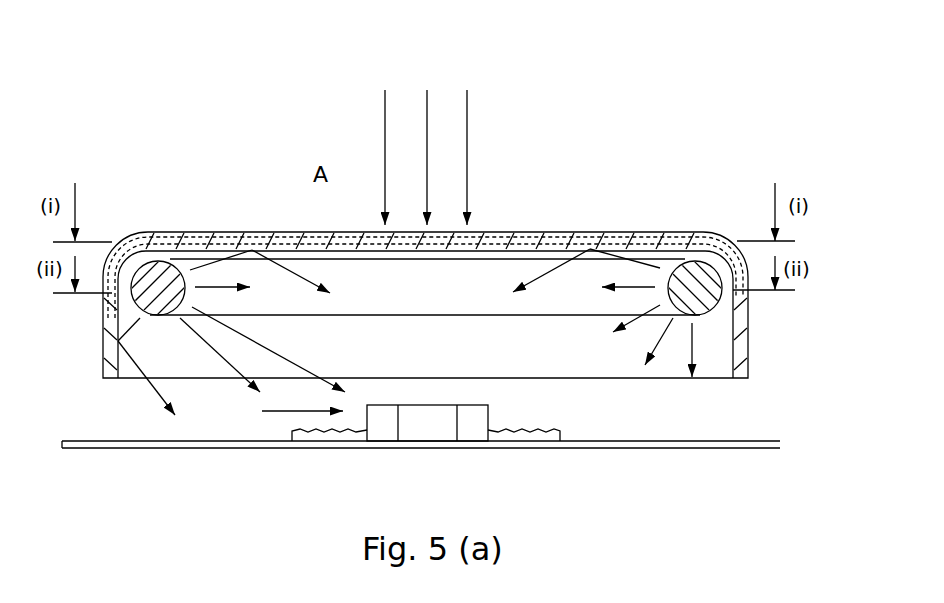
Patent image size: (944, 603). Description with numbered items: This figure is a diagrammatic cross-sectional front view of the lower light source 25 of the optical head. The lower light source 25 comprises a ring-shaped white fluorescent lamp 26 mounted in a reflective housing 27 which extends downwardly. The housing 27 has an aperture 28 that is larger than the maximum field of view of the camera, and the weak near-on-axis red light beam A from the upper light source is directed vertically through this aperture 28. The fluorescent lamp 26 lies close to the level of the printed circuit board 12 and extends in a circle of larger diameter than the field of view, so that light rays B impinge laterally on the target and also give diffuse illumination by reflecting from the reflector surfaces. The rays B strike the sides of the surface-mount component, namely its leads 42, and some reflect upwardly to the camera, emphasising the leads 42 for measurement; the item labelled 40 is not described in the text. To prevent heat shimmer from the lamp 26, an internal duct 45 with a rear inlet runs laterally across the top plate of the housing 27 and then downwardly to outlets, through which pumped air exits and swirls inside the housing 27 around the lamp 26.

The lower light source 25 is at (685, 167).
The reflective housing 27 is at (744, 268).
The aperture 28 is at (517, 248).
The internal duct 45 is at (252, 250).
The fluorescent lamp 26 is at (698, 315).
The adhesive sheet travel direction 40 is at (285, 410).
The leads 42 is at (382, 427).
The printed circuit board 12 is at (130, 448).